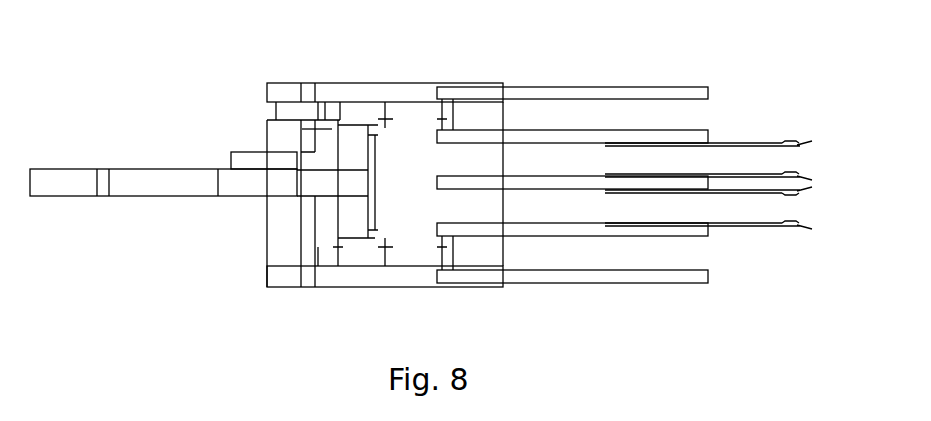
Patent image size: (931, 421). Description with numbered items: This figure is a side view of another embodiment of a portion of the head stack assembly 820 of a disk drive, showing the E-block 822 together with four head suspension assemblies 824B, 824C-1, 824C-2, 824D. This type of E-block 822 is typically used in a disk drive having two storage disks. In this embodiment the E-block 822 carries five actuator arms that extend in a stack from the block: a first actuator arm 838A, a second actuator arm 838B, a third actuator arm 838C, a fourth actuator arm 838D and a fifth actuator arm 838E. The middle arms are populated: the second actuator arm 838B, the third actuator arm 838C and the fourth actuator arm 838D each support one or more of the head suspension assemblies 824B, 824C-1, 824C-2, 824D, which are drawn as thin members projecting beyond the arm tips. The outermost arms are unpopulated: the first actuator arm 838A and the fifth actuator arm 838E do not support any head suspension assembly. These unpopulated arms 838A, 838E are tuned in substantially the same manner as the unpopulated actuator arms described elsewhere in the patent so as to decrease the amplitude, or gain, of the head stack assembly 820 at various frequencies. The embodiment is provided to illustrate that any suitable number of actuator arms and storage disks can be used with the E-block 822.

The head stack assembly 820 is at (212, 250).
The E-block 822 is at (247, 120).
The first actuator arm 838A is at (593, 86).
The second actuator arm 838B is at (590, 130).
The third actuator arm 838C is at (590, 176).
The fourth actuator arm 838D is at (587, 237).
The fifth actuator arm 838E is at (583, 284).
The head suspension assembly 824B is at (740, 143).
The head suspension assembly 824C-1 is at (748, 176).
The head suspension assembly 824C-2 is at (748, 192).
The head suspension assembly 824D is at (740, 226).